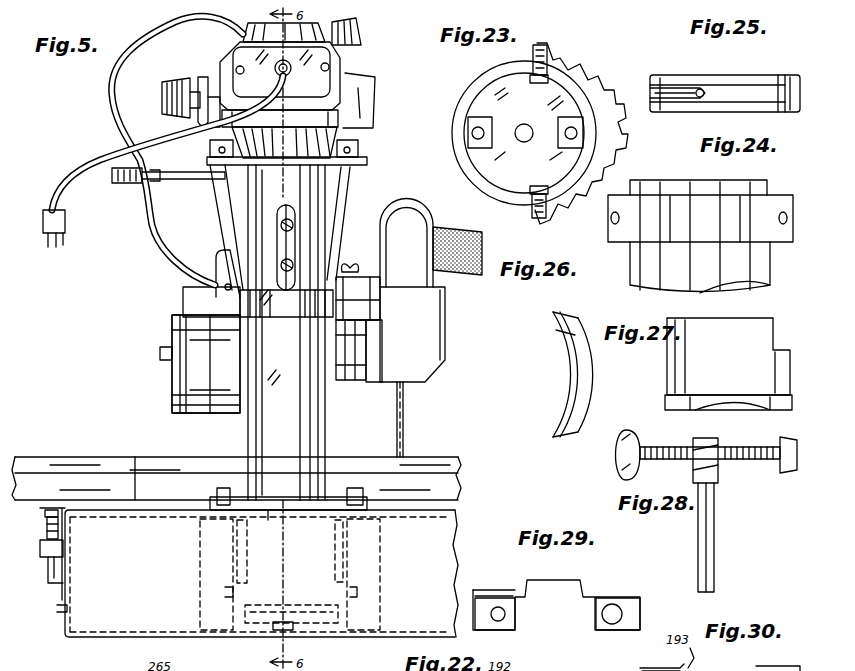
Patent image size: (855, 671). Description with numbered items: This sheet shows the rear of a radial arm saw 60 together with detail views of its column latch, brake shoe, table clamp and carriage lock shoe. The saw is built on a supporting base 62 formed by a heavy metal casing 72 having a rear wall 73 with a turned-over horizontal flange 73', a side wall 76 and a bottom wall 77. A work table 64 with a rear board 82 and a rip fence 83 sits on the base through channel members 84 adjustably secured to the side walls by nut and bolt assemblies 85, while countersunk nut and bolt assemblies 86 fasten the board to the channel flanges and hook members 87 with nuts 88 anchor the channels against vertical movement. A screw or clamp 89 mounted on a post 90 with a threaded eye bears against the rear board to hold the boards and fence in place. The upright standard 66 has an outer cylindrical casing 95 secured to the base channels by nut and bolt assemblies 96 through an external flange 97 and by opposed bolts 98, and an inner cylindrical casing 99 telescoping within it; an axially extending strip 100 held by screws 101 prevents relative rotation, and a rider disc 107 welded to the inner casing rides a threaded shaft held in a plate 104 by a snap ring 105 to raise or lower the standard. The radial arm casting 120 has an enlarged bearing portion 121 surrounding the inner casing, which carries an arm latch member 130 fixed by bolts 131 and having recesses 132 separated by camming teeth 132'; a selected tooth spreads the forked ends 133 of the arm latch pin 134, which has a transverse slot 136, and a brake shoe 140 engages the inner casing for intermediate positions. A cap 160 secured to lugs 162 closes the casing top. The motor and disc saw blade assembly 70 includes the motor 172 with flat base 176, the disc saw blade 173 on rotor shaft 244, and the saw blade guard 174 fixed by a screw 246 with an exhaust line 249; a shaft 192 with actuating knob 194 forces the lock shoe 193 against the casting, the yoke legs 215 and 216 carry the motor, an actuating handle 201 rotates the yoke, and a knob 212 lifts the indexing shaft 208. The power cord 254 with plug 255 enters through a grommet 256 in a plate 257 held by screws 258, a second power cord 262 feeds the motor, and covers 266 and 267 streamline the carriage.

In FIG. 5, the radial arm saw 60 is at (82, 297).
In FIG. 5, the supporting base 62 is at (59, 635).
In FIG. 5, the work table 64 is at (432, 466).
In FIG. 5, the upright standard 66 is at (238, 433).
In FIG. 5, the motor and disc saw blade assembly 70 is at (159, 382).
In FIG. 5, the metal casing 72 is at (458, 540).
In FIG. 5, the rear wall 73 is at (140, 635).
In FIG. 5, the horizontal flange 73' is at (122, 470).
In FIG. 5, the side wall 76 is at (62, 592).
In FIG. 5, the bottom wall 77 is at (168, 636).
In FIG. 5, the rear board 82 is at (462, 478).
In FIG. 5, the rip fence 83 is at (462, 462).
In FIG. 5, the channel member 84 is at (76, 510).
In FIG. 5, the nut and bolt assembly 85 is at (47, 530).
In FIG. 5, the countersunk nut and bolt assembly 86 is at (45, 515).
In FIG. 5, the hook member 87 is at (50, 583).
In FIG. 5, the nut 88 is at (38, 548).
In FIG. 28, the screw or clamp 89 is at (748, 468).
In FIG. 28, the post 90 is at (716, 535).
In FIG. 5, the outer cylindrical casing 95 is at (328, 432).
In FIG. 5, the nut and bolt assembly 96 is at (222, 488).
In FIG. 5, the external flange 97 is at (270, 508).
In FIG. 5, the bolt 98 is at (225, 592).
In FIG. 5, the inner cylindrical casing 99 is at (330, 192).
In FIG. 23, the inner cylindrical casing 99 is at (464, 100).
In FIG. 24, the inner cylindrical casing 99 is at (636, 283).
In FIG. 5, the axially extending strip 100 is at (282, 242).
In FIG. 5, the screw 101 is at (280, 225).
In FIG. 5, the plate 104 is at (340, 613).
In FIG. 5, the snap ring 105 is at (300, 632).
In FIG. 23, the rider disc 107 is at (478, 160).
In FIG. 5, the casting 120 is at (344, 100).
In FIG. 5, the bearing portion 121 is at (320, 140).
In FIG. 23, the arm latch member 130 is at (600, 88).
In FIG. 24, the arm latch member 130 is at (788, 242).
In FIG. 23, the bolt 131 is at (530, 78).
In FIG. 24, the bolt 131 is at (786, 212).
In FIG. 23, the recess 132 is at (600, 130).
In FIG. 24, the recess 132 is at (683, 180).
In FIG. 23, the camming tooth 132' is at (622, 138).
In FIG. 24, the camming tooth 132' is at (707, 257).
In FIG. 25, the forked end 133 is at (652, 93).
In FIG. 25, the arm latch pin 134 is at (732, 86).
In FIG. 25, the transverse slot 136 is at (780, 113).
In FIG. 26, the brake shoe 140 is at (560, 380).
In FIG. 27, the brake shoe 140 is at (675, 378).
In FIG. 5, the cap 160 is at (270, 64).
In FIG. 23, the lug 162 is at (468, 140).
In FIG. 5, the motor 172 is at (185, 404).
In FIG. 5, the disc saw blade 173 is at (406, 410).
In FIG. 5, the saw blade guard 174 is at (410, 300).
In FIG. 5, the flat base 176 is at (220, 413).
In FIG. 5, the shaft 192 is at (203, 76).
In FIG. 29, the lock shoe 193 is at (590, 578).
In FIG. 5, the actuating knob 194 is at (168, 82).
In FIG. 5, the actuating handle 201 is at (138, 185).
In FIG. 5, the vertically movable shaft 208 is at (330, 42).
In FIG. 5, the knob 212 is at (362, 25).
In FIG. 5, the leg 215 is at (344, 210).
In FIG. 5, the leg 216 is at (226, 210).
In FIG. 5, the rotor shaft 244 is at (158, 354).
In FIG. 5, the screw 246 is at (352, 266).
In FIG. 5, the exhaust line 249 is at (468, 280).
In FIG. 5, the electric power cord 254 is at (100, 156).
In FIG. 5, the plug 255 is at (67, 228).
In FIG. 5, the grommet 256 is at (291, 70).
In FIG. 5, the plate 257 is at (332, 60).
In FIG. 5, the screw 258 is at (238, 66).
In FIG. 5, the power cord 262 is at (110, 100).
In FIG. 5, the cover 266 is at (212, 126).
In FIG. 5, the cover 267 is at (377, 77).